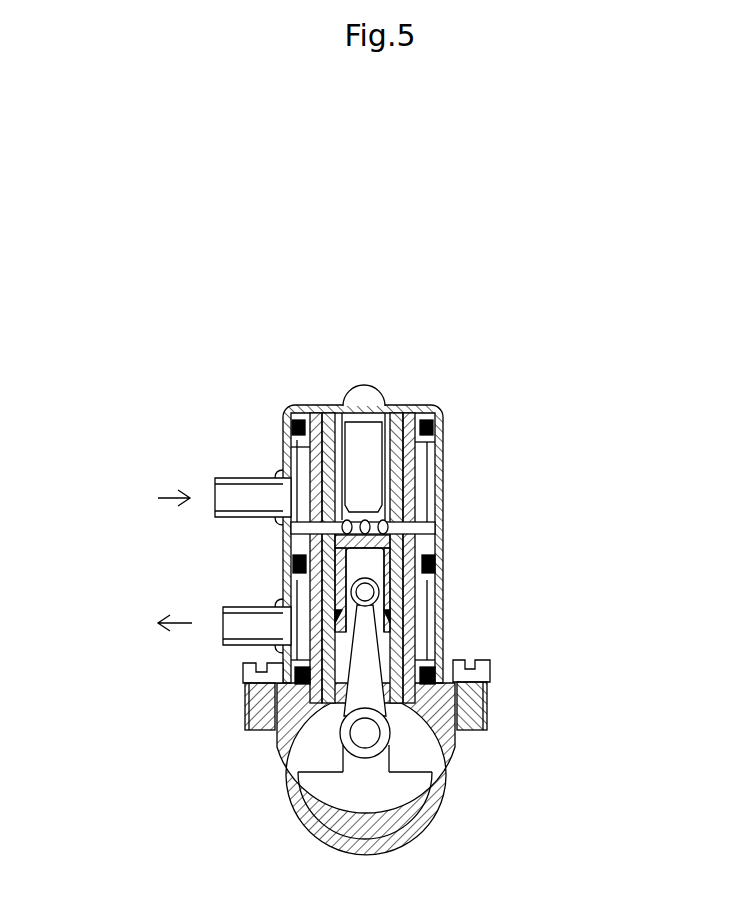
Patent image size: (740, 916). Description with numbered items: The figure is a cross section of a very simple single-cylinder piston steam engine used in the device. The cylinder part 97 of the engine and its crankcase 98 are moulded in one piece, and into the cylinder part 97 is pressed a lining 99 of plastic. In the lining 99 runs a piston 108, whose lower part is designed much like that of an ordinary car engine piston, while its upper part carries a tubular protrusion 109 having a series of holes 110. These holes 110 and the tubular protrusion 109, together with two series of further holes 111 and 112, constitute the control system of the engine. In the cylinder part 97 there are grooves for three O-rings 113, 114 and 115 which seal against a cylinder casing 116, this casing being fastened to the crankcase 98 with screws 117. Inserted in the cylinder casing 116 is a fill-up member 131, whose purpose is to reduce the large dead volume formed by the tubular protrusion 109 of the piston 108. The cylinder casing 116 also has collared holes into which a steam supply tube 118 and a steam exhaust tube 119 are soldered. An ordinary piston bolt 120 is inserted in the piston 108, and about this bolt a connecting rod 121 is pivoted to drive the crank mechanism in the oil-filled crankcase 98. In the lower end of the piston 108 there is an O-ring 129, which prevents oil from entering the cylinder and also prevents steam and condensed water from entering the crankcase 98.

The cylinder part 97 is at (418, 486).
The crankcase 98 is at (463, 758).
The lining 99 is at (410, 412).
The piston 108 is at (403, 545).
The tubular protrusion 109 is at (393, 469).
The holes 110 is at (362, 437).
The further holes 111 is at (237, 474).
The further holes 112 is at (180, 550).
The O-ring 113 is at (293, 407).
The O-ring 114 is at (173, 547).
The O-ring 115 is at (270, 689).
The cylinder casing 116 is at (536, 619).
The screws 117 is at (175, 696).
The steam supply tube 118 is at (235, 477).
The steam exhaust tube 119 is at (262, 636).
The piston bolt 120 is at (372, 591).
The connecting rod 121 is at (381, 670).
The O-ring 129 is at (400, 603).
The fill-up member 131 is at (366, 522).